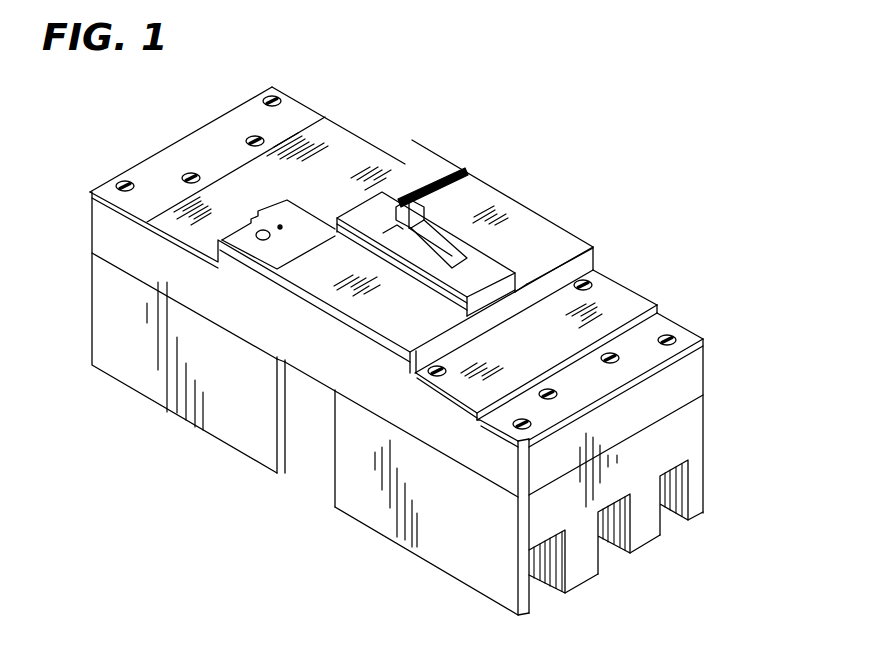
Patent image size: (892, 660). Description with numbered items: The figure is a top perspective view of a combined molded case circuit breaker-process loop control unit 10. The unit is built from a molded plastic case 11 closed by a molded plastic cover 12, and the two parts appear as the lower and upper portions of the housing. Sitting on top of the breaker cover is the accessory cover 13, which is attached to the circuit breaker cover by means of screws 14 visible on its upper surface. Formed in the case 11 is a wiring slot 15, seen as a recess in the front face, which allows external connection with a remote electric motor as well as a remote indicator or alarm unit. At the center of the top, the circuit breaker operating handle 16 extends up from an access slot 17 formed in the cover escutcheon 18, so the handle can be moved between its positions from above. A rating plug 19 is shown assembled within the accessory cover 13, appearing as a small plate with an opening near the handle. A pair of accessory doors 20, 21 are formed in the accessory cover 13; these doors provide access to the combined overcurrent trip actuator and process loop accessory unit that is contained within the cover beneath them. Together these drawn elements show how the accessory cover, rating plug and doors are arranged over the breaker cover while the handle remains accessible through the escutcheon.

The combined molded case circuit breaker-process loop control unit 10 is at (174, 502).
The molded plastic case 11 is at (147, 397).
The molded plastic cover 12 is at (705, 410).
The accessory cover 13 is at (470, 197).
The screws 14 is at (598, 273).
The wiring slot 15 is at (333, 472).
The circuit breaker operating handle 16 is at (466, 176).
The access slot 17 is at (503, 228).
The cover escutcheon 18 is at (358, 200).
The rating plug 19 is at (255, 215).
The accessory door 20 is at (411, 327).
The accessory door 21 is at (545, 268).